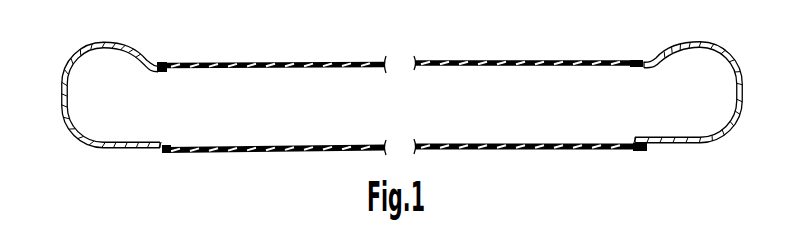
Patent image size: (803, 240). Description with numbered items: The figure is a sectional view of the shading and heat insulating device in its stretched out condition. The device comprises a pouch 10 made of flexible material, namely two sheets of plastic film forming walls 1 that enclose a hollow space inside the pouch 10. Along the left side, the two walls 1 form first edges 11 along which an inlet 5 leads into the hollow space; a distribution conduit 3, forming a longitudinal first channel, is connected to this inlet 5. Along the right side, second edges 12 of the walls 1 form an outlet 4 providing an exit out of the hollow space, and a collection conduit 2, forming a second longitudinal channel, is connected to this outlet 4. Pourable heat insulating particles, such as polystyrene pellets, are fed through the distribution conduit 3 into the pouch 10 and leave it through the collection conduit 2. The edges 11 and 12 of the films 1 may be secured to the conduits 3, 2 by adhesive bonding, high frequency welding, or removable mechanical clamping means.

The walls 1 is at (498, 144).
The collection conduit 2 is at (676, 106).
The distribution conduit 3 is at (128, 86).
The outlet 4 is at (648, 96).
The inlet 5 is at (162, 98).
The pouch 10 is at (393, 49).
The first edges 11 is at (162, 61).
The second edges 12 is at (638, 62).